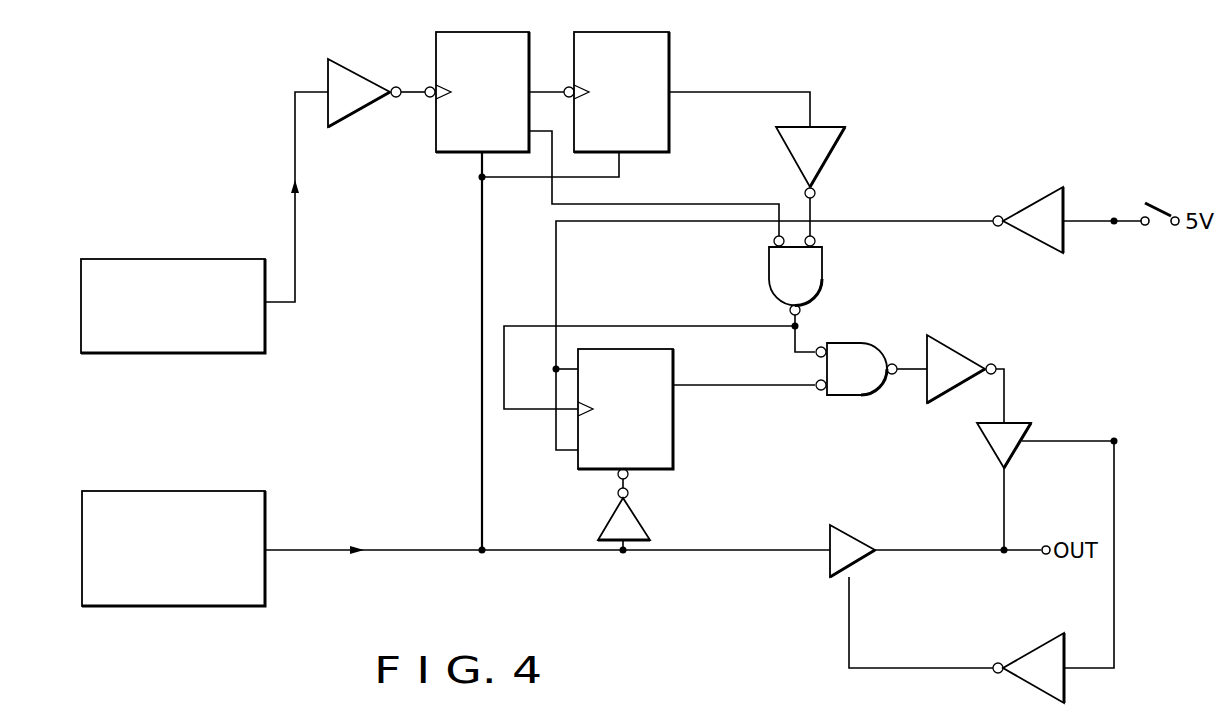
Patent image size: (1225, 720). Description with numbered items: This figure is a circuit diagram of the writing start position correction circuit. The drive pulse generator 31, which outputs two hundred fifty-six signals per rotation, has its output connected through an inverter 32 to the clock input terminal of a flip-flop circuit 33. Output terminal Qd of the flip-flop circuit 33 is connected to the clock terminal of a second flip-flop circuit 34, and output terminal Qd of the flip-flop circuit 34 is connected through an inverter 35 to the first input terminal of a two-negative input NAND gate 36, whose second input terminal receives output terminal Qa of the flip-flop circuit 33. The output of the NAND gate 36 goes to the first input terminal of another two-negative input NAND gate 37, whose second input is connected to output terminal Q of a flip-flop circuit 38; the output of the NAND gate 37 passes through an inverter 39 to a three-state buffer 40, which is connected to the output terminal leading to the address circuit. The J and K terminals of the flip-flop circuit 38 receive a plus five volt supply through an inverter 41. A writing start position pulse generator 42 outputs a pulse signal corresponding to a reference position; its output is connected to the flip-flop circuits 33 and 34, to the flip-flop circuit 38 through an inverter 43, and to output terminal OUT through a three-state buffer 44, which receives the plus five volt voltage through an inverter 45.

The drive pulse generator 31 is at (118, 259).
The inverter 32 is at (360, 68).
The flip-flop circuit 33 is at (442, 154).
The flip-flop circuit 34 is at (671, 120).
The inverter 35 is at (838, 152).
The two-negative input NAND gate 36 is at (823, 266).
The two-negative input NAND gate 37 is at (862, 342).
The flip-flop circuit 38 is at (675, 443).
The inverter 39 is at (957, 342).
The three-state buffer 40 is at (1031, 428).
The inverter 41 is at (1018, 208).
The writing start position pulse generator 42 is at (267, 509).
The inverter 43 is at (645, 521).
The three-state buffer 44 is at (855, 536).
The inverter 45 is at (1017, 656).